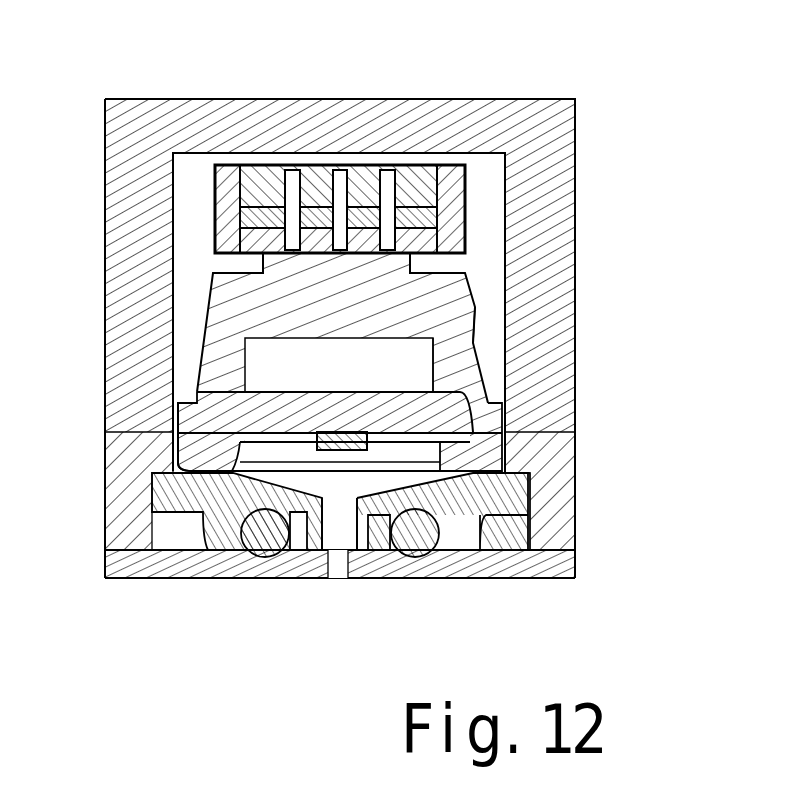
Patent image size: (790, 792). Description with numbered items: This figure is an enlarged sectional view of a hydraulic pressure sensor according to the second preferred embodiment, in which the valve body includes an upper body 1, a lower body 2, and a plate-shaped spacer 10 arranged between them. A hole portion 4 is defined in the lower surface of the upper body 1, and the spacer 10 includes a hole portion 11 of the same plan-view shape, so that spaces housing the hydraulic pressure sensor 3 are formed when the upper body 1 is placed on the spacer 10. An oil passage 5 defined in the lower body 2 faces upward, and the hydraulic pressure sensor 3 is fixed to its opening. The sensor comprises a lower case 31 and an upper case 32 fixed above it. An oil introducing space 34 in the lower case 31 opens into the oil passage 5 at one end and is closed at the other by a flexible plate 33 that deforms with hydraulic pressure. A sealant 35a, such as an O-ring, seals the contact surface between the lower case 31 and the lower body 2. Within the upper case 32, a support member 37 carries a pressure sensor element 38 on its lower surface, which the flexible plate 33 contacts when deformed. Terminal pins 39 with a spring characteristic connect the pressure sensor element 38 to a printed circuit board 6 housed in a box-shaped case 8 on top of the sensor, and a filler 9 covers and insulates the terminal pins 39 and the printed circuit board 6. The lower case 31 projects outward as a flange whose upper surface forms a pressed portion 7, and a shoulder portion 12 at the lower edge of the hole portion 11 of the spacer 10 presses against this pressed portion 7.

The upper body 1 is at (568, 148).
The lower body 2 is at (568, 563).
The hydraulic pressure sensor 3 is at (465, 352).
The hole portion 4 is at (490, 317).
The oil passage 5 is at (349, 566).
The printed circuit board 6 is at (253, 217).
The pressed portion 7 is at (525, 478).
The case 8 is at (457, 178).
The filler 9 is at (422, 180).
The spacer 10 is at (117, 493).
The hole portion 11 is at (510, 458).
The shoulder portion 12 is at (517, 473).
The lower case 31 is at (167, 500).
The upper case 32 is at (222, 320).
The flexible plate 33 is at (415, 470).
The oil introducing space 34 is at (320, 540).
The sealant 35a is at (253, 545).
The support member 37 is at (222, 428).
The pressure sensor element 38 is at (345, 442).
The terminal pin 39 is at (387, 195).